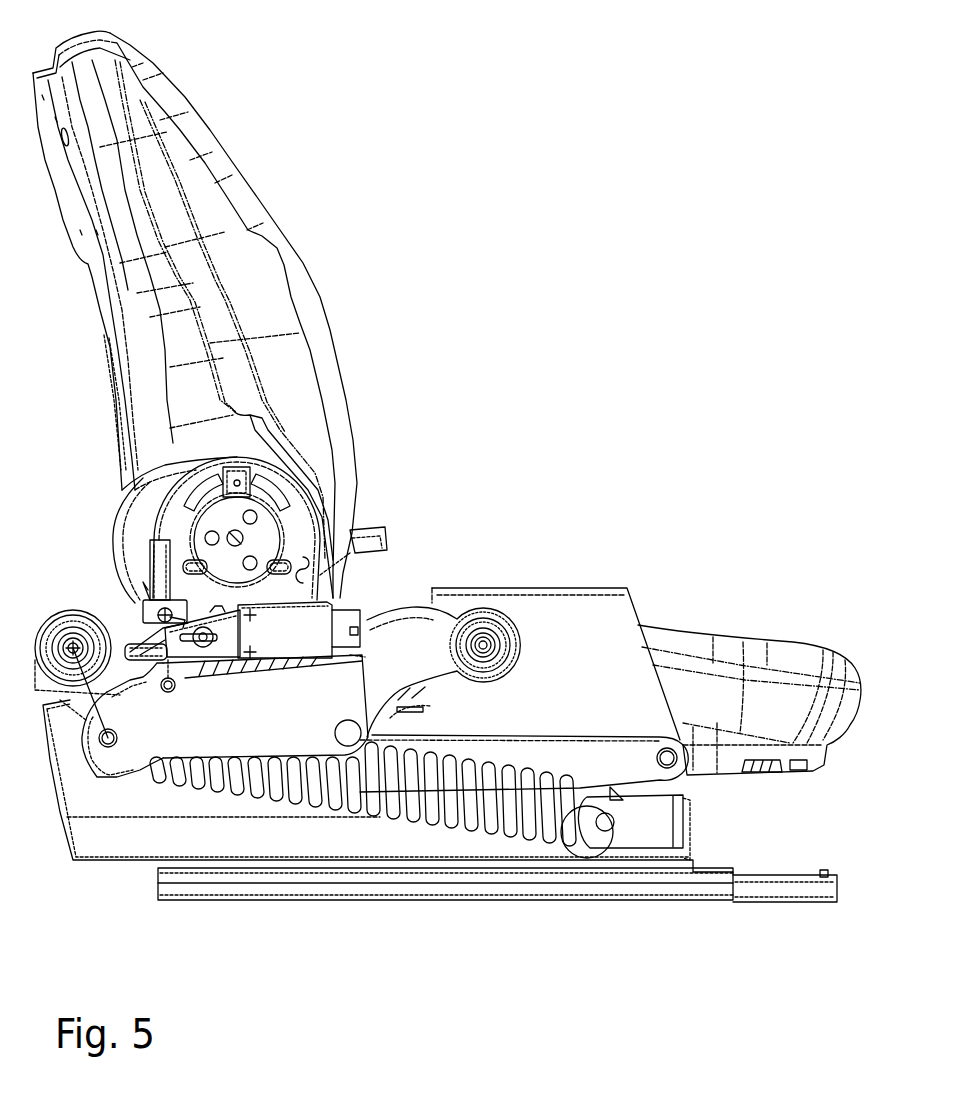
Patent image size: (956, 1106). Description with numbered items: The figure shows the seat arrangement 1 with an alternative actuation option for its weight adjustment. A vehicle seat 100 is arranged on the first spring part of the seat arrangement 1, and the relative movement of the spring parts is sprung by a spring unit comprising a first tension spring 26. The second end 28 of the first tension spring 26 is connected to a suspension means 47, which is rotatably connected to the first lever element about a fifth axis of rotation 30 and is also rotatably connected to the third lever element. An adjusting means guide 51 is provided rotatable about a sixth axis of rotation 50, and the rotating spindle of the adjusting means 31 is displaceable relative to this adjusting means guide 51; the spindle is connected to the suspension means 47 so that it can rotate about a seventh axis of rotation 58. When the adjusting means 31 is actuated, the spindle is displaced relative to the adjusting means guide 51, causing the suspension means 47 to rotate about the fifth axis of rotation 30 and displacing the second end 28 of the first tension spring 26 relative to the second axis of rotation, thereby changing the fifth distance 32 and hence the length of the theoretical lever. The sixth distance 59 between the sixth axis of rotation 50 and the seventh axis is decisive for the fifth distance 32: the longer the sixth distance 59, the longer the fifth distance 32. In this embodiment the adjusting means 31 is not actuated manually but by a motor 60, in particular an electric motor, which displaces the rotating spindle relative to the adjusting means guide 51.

The seat arrangement 1 is at (450, 183).
The vehicle seat 100 is at (152, 105).
The adjusting means 31 is at (70, 513).
The sixth axis of rotation 50 is at (145, 600).
The adjusting means guide 51 is at (143, 613).
The motor 60 is at (335, 612).
The fifth distance 32 is at (95, 695).
The seventh axis of rotation 58 is at (168, 693).
The sixth distance 59 is at (147, 678).
The second end 28 is at (90, 762).
The suspension means 47 is at (292, 745).
The fifth axis of rotation 30 is at (356, 750).
The first tension spring 26 is at (512, 835).